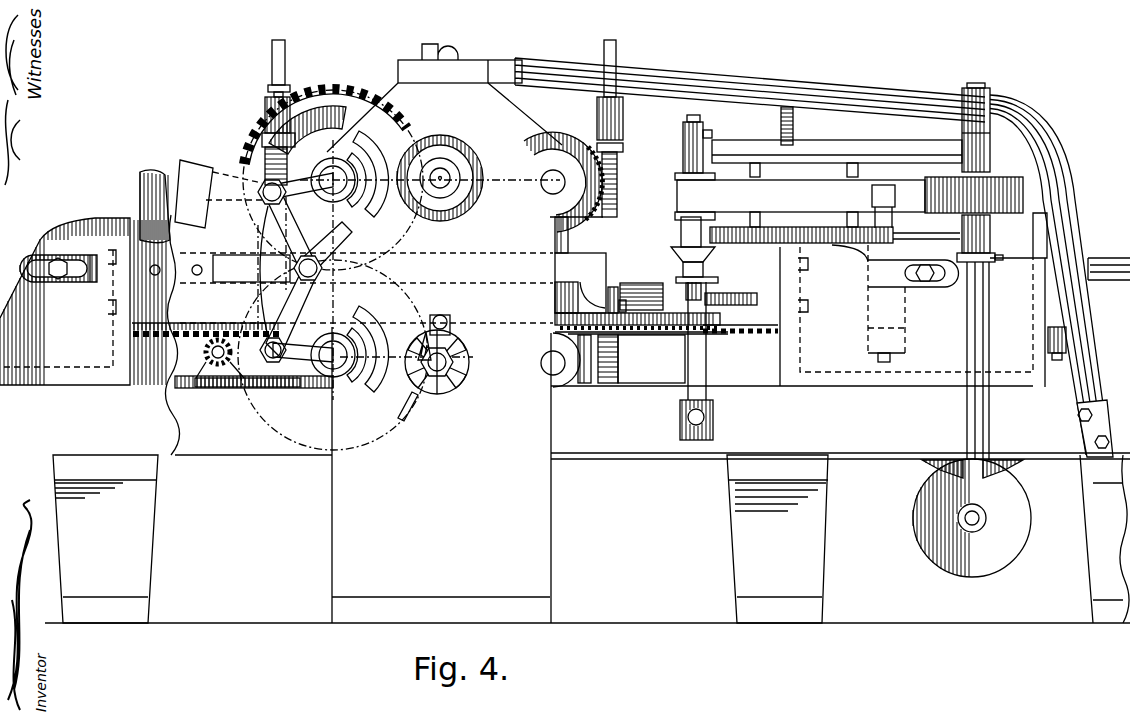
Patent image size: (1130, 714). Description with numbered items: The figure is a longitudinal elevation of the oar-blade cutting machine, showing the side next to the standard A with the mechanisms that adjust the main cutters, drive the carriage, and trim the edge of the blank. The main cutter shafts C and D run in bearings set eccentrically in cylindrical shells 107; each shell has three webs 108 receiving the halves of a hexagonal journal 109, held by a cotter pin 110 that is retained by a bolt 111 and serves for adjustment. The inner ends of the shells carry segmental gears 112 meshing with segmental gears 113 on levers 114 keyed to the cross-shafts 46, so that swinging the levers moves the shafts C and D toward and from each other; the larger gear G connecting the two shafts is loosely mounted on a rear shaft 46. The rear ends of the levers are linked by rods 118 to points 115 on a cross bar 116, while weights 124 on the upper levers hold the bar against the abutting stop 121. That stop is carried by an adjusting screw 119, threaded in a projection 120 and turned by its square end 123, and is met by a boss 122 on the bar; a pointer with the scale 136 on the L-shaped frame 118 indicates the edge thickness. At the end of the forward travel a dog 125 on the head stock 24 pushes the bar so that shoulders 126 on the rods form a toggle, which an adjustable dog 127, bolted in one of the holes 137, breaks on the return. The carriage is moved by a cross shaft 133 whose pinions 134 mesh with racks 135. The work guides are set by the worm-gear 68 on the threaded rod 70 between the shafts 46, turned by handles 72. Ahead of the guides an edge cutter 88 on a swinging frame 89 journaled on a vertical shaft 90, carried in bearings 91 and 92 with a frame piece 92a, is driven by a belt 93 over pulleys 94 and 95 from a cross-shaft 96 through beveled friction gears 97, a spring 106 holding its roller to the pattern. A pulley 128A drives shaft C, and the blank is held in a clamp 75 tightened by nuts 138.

The head stock 24 is at (913, 300).
The shaft 46 is at (338, 198).
The worm-gear 68 is at (350, 152).
The rod 70 is at (262, 174).
The operating handle 72 is at (286, 58).
The clamp 75 is at (1062, 236).
The cutter 88 is at (718, 266).
The swinging frame 89 is at (858, 147).
The vertical shaft 90 is at (990, 312).
The bearing 91 is at (962, 418).
The bearing 92 is at (991, 106).
The frame piece 92a is at (733, 84).
The belt 93 is at (817, 211).
The pulley 94 is at (680, 178).
The pulley 95 is at (1000, 180).
The cross-shaft 96 is at (986, 518).
The beveled friction gears 97 is at (930, 470).
The spring 106 is at (795, 120).
The cylindrical shell 107 is at (399, 421).
The web 108 is at (425, 332).
The hexagonal journal 109 is at (453, 382).
The cotter pin 110 is at (451, 329).
The bolt 111 is at (448, 322).
The segmental gear 112 is at (352, 402).
The segmental gear 113 is at (322, 298).
The lever 114 is at (313, 389).
The point 115 is at (326, 260).
The cross bar 116 is at (409, 283).
The rod 118 is at (262, 247).
The adjusting screw 119 is at (736, 338).
The projection 120 is at (661, 282).
The abutting piece 121 is at (612, 286).
The boss 122 is at (600, 314).
The square end 123 is at (737, 304).
The weight 124 is at (214, 196).
The dog 125 is at (893, 288).
The shoulder 126 is at (324, 270).
The adjustable dog 127 is at (102, 294).
The pulley 128A is at (456, 162).
The cross shaft 133 is at (219, 366).
The pinion 134 is at (204, 353).
The rack 135 is at (182, 336).
The scale 136 is at (642, 324).
The hole 137 is at (160, 276).
The nut 138 is at (883, 362).
The standard A is at (441, 475).
The shaft C is at (462, 178).
The shaft D is at (468, 358).
The gear G is at (336, 94).